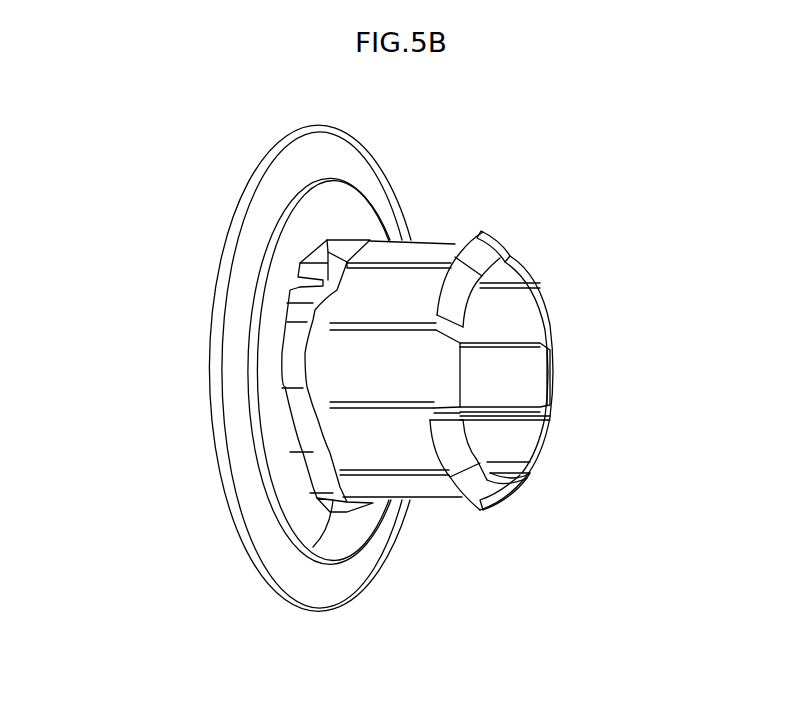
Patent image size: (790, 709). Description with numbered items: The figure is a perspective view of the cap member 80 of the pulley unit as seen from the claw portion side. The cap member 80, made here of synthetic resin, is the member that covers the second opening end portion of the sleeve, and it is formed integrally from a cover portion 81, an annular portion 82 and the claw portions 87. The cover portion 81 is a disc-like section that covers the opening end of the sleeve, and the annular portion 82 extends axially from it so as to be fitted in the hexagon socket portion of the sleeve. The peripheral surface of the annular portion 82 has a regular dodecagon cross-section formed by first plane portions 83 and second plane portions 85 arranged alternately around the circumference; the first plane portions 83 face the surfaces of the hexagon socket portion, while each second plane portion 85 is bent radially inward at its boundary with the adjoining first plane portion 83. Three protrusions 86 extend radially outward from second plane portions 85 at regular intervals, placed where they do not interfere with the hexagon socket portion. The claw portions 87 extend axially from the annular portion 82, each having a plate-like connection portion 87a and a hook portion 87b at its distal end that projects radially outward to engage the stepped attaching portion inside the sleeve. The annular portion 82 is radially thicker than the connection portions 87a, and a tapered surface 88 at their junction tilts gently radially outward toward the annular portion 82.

The cap member 80 is at (467, 117).
The cover portion 81 is at (292, 163).
The annular portion 82 is at (343, 237).
The first plane portion 83 is at (321, 250).
The second plane portion 85 is at (297, 312).
The protrusion 86 is at (287, 277).
The claw portion 87 is at (598, 155).
The connection portion 87a is at (430, 253).
The hook portion 87b is at (487, 252).
The tapered surface 88 is at (357, 500).